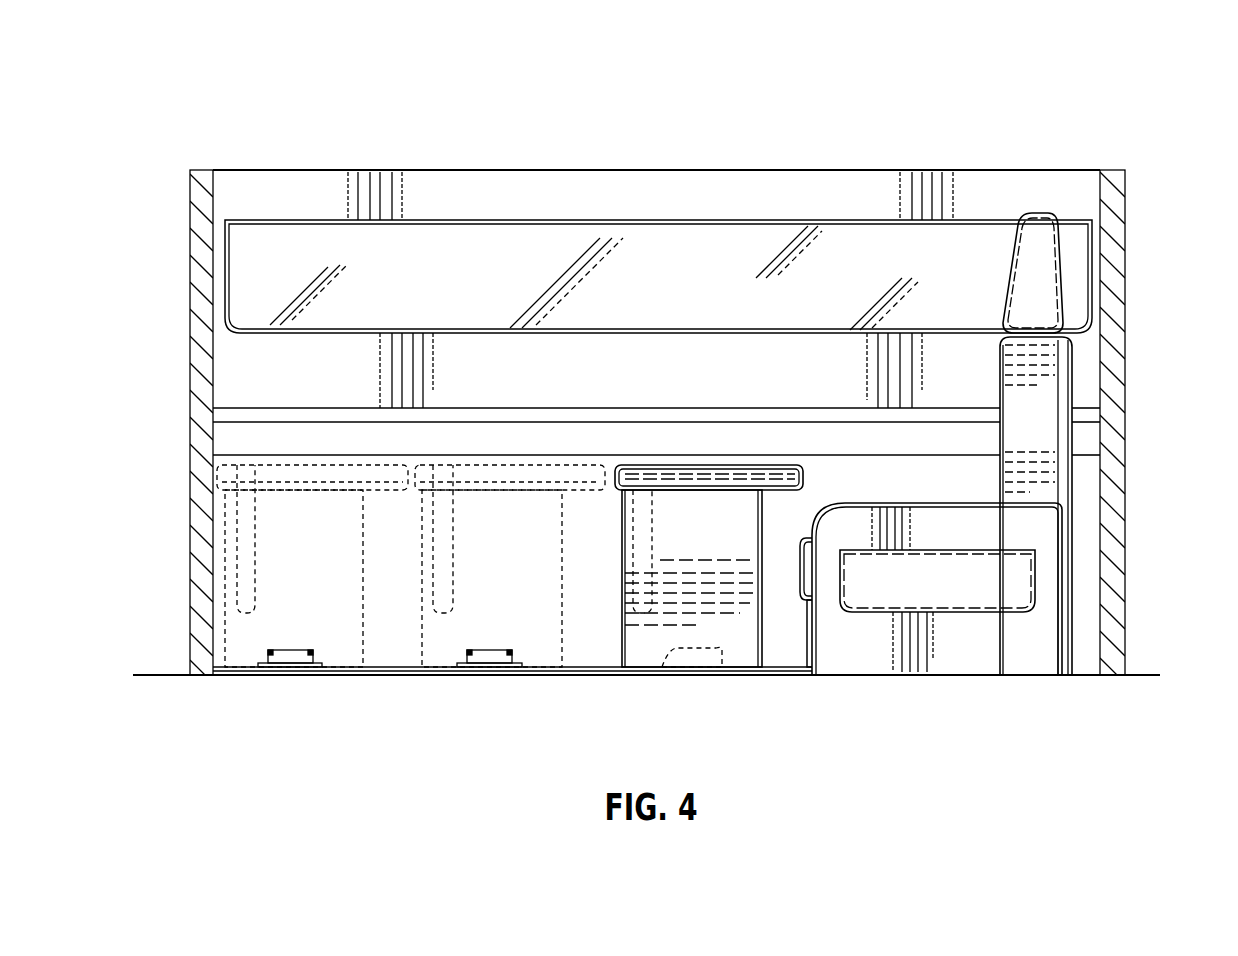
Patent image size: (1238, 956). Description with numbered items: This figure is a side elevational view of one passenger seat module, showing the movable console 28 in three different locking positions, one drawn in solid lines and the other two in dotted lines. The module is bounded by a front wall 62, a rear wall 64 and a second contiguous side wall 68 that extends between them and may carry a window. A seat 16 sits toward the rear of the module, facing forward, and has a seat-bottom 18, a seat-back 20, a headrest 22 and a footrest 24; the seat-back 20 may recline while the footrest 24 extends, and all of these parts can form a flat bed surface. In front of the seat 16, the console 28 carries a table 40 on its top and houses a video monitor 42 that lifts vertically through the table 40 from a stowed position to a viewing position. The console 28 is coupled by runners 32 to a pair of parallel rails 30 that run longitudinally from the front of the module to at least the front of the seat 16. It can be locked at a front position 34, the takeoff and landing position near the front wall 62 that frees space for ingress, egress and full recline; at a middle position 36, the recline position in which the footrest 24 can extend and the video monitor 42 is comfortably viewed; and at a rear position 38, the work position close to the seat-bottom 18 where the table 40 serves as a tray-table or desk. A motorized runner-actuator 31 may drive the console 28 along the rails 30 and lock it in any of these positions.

The seat 16 is at (970, 624).
The seat-bottom 18 is at (806, 568).
The seat-back 20 is at (1043, 370).
The headrest 22 is at (1040, 270).
The footrest 24 is at (807, 633).
The movable console 28 is at (262, 630).
The rails 30 is at (378, 668).
The motorized runner-actuator 31 is at (410, 671).
The runners 32 is at (293, 658).
The front position 34 is at (292, 574).
The middle position 36 is at (489, 574).
The rear position 38 is at (682, 533).
The table 40 is at (303, 483).
The video monitor 42 is at (257, 508).
The front wall 62 is at (200, 422).
The rear wall 64 is at (1125, 555).
The second contiguous side wall 68 is at (753, 192).